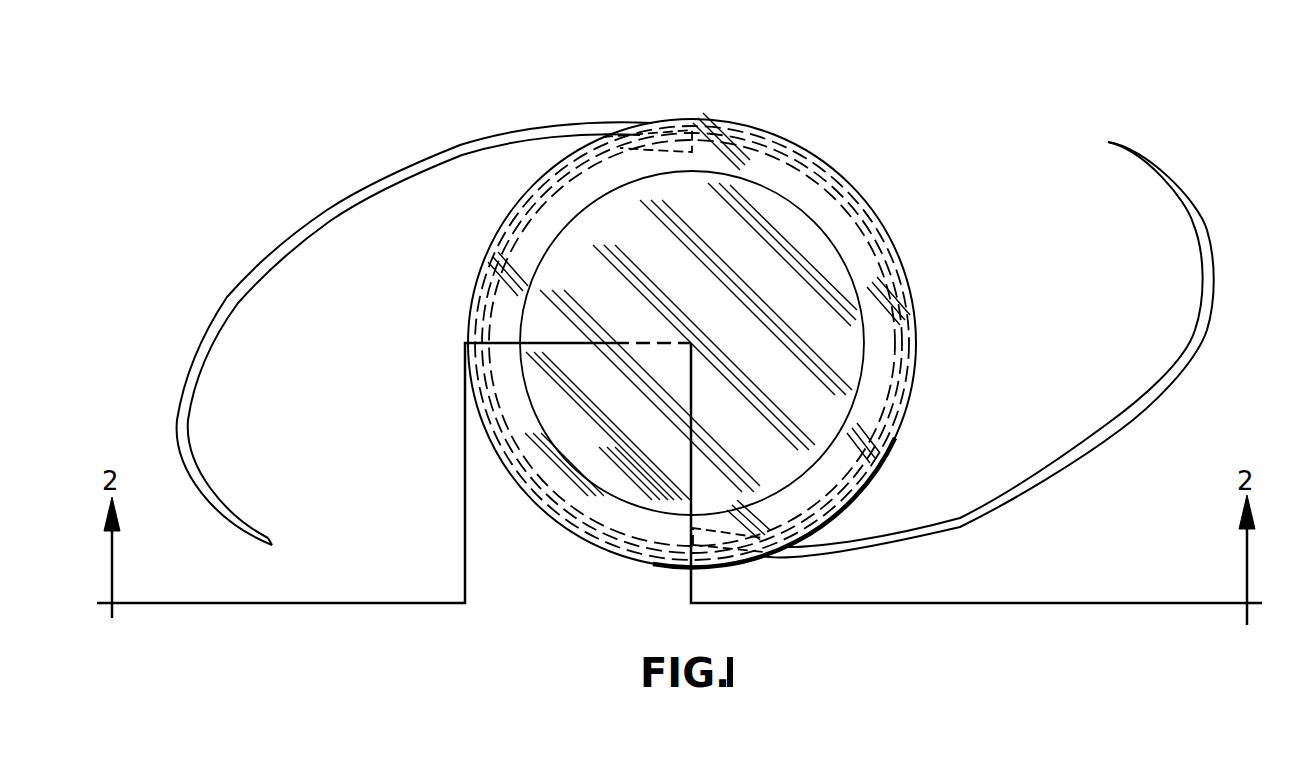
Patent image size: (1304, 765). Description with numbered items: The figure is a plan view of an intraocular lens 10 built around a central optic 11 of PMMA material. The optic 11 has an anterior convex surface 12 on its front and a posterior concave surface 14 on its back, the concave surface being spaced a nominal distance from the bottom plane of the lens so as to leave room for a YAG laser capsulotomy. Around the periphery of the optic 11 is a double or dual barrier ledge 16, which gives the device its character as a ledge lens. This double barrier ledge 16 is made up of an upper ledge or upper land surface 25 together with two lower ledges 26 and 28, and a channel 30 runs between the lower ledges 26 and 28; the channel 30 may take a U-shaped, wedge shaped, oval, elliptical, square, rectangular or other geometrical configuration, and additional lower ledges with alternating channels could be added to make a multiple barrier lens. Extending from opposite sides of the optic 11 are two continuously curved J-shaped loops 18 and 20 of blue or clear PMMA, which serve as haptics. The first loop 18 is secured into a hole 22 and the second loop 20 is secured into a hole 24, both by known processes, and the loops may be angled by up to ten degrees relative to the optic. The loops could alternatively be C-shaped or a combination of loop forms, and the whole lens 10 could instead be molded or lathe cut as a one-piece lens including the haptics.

The intraocular lens 10 is at (1095, 68).
The optic 11 is at (848, 183).
The anterior convex surface 12 is at (833, 255).
The posterior concave surface 14 is at (805, 298).
The double barrier ledge 16 is at (898, 305).
The J-shaped loop 18 is at (178, 393).
The J-shaped loop 20 is at (1215, 265).
The hole 22 is at (640, 135).
The hole 24 is at (730, 548).
The upper ledge 25 is at (768, 168).
The lower ledge 26 is at (910, 343).
The lower ledge 28 is at (895, 388).
The channel 30 is at (885, 426).